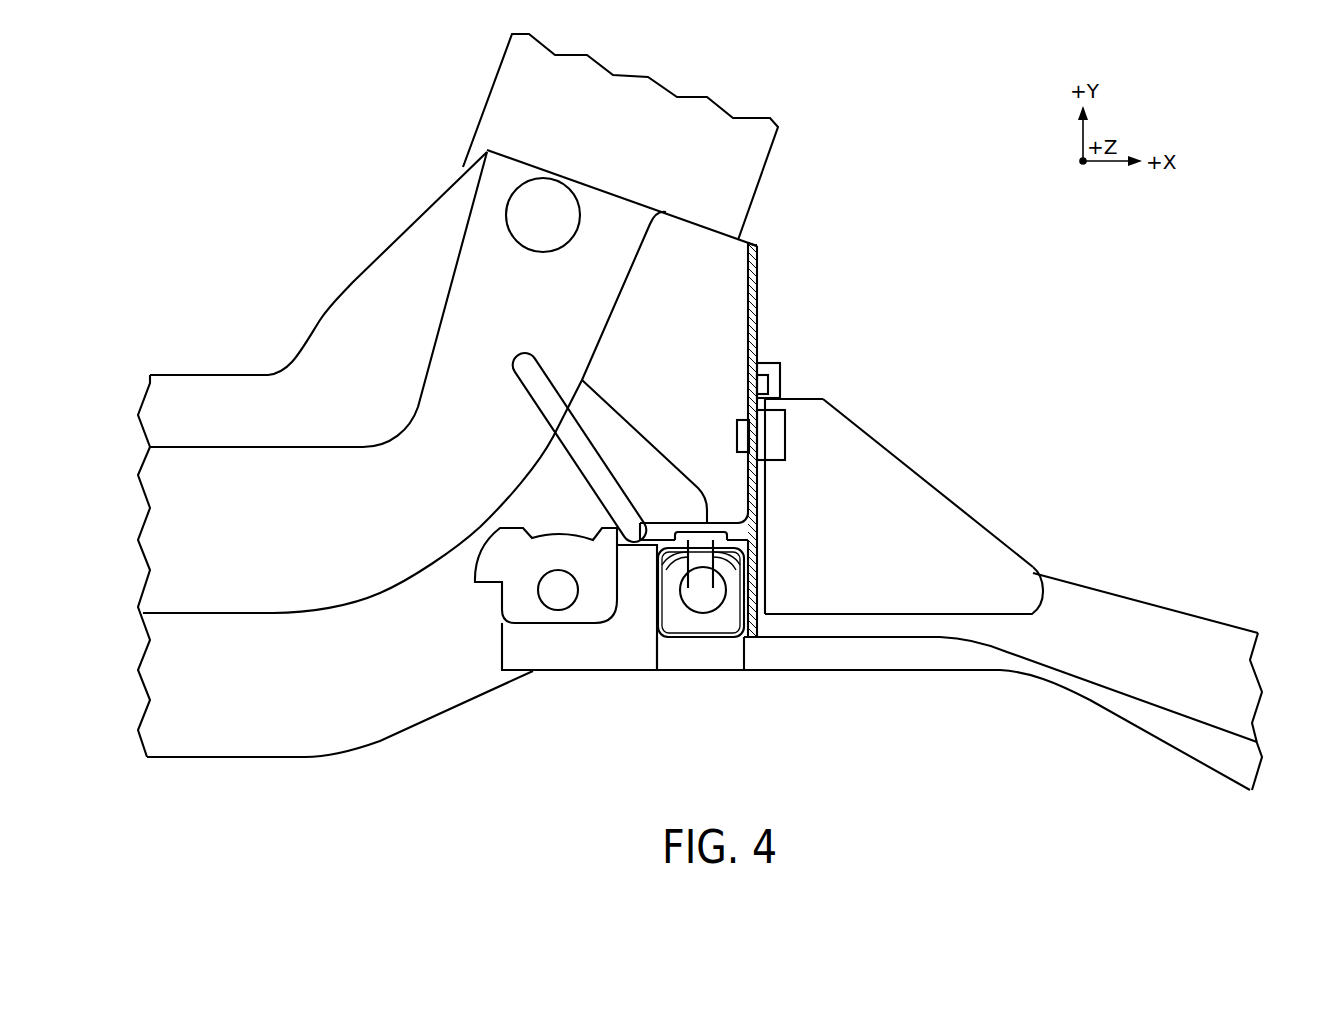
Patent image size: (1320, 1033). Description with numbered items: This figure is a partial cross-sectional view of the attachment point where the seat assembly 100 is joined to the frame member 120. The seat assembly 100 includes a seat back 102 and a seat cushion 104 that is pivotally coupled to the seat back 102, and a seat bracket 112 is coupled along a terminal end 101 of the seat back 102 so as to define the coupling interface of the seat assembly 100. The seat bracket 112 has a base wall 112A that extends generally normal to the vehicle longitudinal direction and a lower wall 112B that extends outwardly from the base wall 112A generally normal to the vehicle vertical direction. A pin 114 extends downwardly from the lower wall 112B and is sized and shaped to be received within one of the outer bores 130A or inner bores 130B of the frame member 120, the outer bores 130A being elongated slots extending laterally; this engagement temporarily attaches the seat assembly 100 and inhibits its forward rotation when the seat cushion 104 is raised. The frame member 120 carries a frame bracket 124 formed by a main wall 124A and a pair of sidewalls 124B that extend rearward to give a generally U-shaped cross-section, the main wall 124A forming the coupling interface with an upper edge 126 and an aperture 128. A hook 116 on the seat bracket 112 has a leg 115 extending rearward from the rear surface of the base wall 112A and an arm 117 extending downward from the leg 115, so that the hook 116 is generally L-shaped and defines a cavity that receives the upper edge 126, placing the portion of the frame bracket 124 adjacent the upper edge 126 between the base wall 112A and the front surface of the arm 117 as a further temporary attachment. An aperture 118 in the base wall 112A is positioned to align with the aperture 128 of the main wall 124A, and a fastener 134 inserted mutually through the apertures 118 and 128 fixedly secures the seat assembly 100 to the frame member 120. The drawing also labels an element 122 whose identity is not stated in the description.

The seat assembly 100 is at (206, 201).
The terminal ends 101 is at (830, 727).
The seat back 102 is at (707, 108).
The seat cushion 104 is at (180, 748).
The seat bracket 112 is at (665, 393).
The base wall 112A is at (758, 290).
The lower wall 112B is at (633, 540).
The pin 114 is at (700, 622).
The leg 115 is at (760, 365).
The hook 116 is at (822, 343).
The arm 117 is at (782, 392).
The aperture 118 is at (779, 417).
The frame member 120 is at (684, 645).
The arm 122 is at (1200, 582).
The frame bracket 124 is at (904, 494).
The main wall 124A is at (768, 527).
The sidewall 124B is at (920, 492).
The upper edge 126 is at (758, 393).
The aperture 128 is at (757, 460).
The outer bore 130A is at (747, 556).
The inner bore 130B is at (675, 561).
The fastener 134 is at (783, 435).